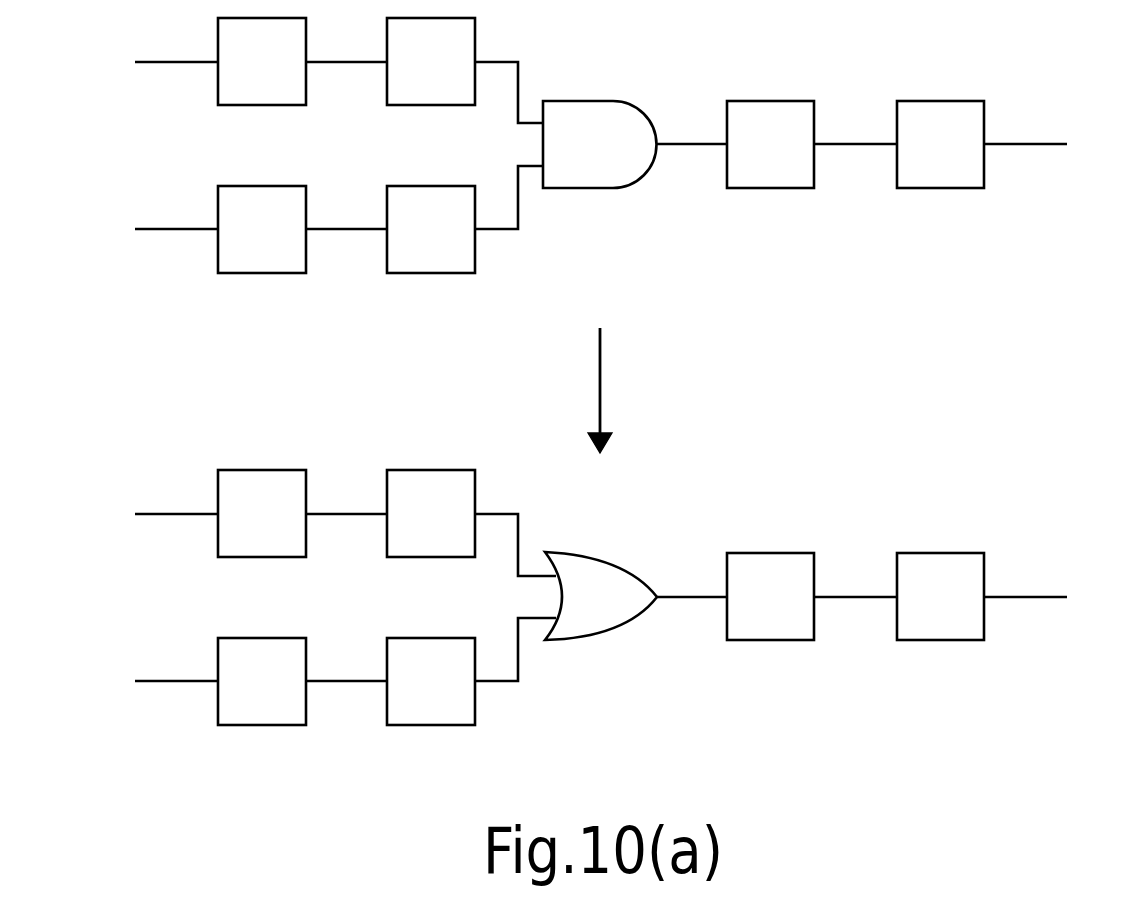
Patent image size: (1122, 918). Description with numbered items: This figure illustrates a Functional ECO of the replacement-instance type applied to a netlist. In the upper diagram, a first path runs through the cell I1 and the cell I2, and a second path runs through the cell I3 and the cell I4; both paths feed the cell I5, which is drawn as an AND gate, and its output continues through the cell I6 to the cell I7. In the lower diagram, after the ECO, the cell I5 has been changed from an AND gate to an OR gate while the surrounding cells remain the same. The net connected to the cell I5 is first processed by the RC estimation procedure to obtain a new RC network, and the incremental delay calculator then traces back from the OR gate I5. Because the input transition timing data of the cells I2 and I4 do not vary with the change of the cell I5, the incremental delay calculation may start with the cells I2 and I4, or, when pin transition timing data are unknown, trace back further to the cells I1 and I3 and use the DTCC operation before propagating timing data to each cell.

The cell I1 is at (262, 313).
The cell I2 is at (431, 313).
The cell I3 is at (262, 481).
The cell I4 is at (431, 481).
The cell I5 is at (600, 397).
The cell I6 is at (770, 397).
The cell I7 is at (940, 397).